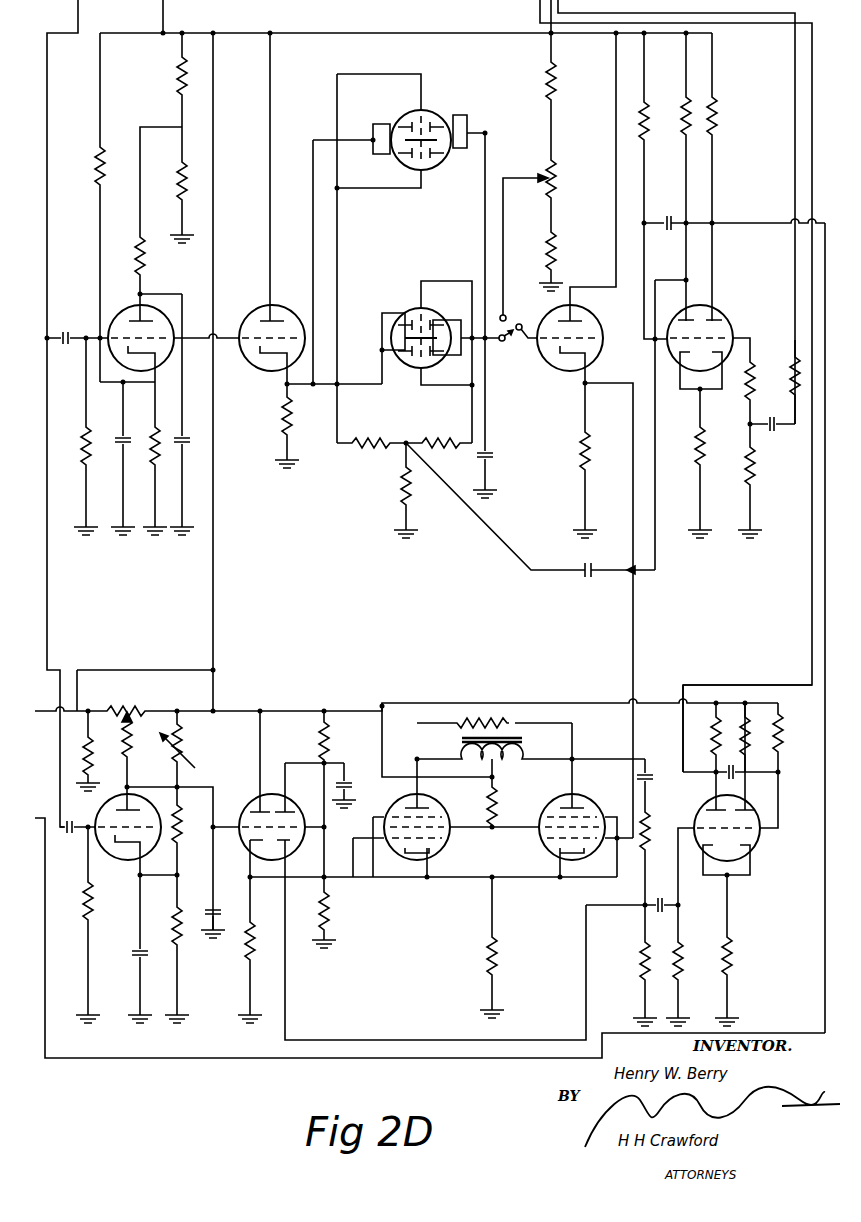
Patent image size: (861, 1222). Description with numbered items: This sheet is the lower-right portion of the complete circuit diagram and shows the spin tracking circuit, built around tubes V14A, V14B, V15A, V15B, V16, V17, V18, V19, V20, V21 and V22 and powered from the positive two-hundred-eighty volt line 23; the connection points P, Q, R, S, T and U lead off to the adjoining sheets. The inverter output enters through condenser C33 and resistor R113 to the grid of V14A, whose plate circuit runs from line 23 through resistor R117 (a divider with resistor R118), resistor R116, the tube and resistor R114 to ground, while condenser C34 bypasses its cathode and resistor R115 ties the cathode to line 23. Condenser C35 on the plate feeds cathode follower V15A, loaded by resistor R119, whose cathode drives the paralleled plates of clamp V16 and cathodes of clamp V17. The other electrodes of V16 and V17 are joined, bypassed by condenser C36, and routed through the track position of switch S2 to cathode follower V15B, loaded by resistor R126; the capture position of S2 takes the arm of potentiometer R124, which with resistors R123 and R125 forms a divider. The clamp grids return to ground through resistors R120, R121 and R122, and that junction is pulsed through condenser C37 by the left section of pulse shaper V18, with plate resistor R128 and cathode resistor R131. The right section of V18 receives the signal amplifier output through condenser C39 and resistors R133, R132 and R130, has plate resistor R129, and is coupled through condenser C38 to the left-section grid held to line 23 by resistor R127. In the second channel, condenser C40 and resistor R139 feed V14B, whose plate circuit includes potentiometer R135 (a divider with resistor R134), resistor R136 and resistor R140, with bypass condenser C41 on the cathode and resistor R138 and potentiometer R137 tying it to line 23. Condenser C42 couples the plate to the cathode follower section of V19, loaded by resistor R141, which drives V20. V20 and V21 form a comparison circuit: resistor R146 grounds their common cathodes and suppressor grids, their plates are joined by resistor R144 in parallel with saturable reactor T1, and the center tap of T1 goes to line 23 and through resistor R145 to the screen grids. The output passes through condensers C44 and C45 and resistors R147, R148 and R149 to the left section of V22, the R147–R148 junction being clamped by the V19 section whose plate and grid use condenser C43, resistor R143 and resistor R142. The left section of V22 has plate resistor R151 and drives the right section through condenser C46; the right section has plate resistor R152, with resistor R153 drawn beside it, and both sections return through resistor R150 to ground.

The terminal P is at (68, 413).
The terminal Q is at (169, 18).
The terminal R is at (676, 386).
The terminal S is at (676, 212).
The terminal T is at (70, 703).
The terminal U is at (430, 929).
The resistor R113 is at (74, 436).
The resistor R114 is at (146, 458).
The resistor R115 is at (81, 207).
The resistor R116 is at (158, 224).
The resistor R117 is at (166, 80).
The resistor R118 is at (170, 185).
The resistor R119 is at (301, 426).
The resistor R120 is at (371, 437).
The resistor R121 is at (439, 437).
The resistor R122 is at (392, 490).
The resistor R123 is at (567, 95).
The potentiometer R124 is at (567, 194).
The resistor R125 is at (564, 260).
The resistor R126 is at (598, 460).
The resistor R127 is at (665, 118).
The resistor R128 is at (684, 137).
The resistor R129 is at (719, 117).
The resistor R130 is at (754, 386).
The resistor R131 is at (713, 463).
The resistor R132 is at (756, 483).
The resistor R133 is at (796, 380).
The resistor R134 is at (88, 770).
The potentiometer R135 is at (441, 702).
The resistor R136 is at (128, 752).
The potentiometer R137 is at (190, 749).
The resistor R138 is at (192, 831).
The resistor R139 is at (100, 925).
The resistor R140 is at (182, 950).
The resistor R141 is at (262, 950).
The resistor R142 is at (340, 794).
The resistor R143 is at (337, 912).
The resistor R144 is at (494, 715).
The resistor R145 is at (509, 802).
The resistor R146 is at (506, 947).
The resistor R147 is at (647, 825).
The resistor R148 is at (630, 965).
The resistor R149 is at (690, 965).
The resistor R150 is at (741, 950).
The resistor R151 is at (704, 737).
The resistor R152 is at (750, 738).
The resistor R153 is at (781, 746).
The condenser C33 is at (77, 329).
The condenser C34 is at (114, 458).
The condenser C35 is at (190, 414).
The condenser C36 is at (497, 315).
The condenser C37 is at (614, 579).
The condenser C38 is at (690, 196).
The condenser C39 is at (772, 430).
The condenser C40 is at (73, 836).
The bypass condenser C41 is at (138, 949).
The condenser C42 is at (222, 922).
The condenser C43 is at (354, 785).
The condenser C44 is at (658, 784).
The condenser C45 is at (632, 899).
The condenser C46 is at (747, 765).
The tube V14A is at (127, 312).
The tube V14B is at (97, 816).
The cathode follower V15A is at (280, 310).
The cathode follower V15B is at (588, 303).
The clamp V16 is at (437, 114).
The clamp V17 is at (432, 320).
The pulse shaper V18 is at (725, 310).
The tube V19 is at (285, 808).
The tube V20 is at (433, 812).
The tube V21 is at (585, 812).
The tube V22 is at (690, 812).
The switch S2 is at (509, 316).
The saturable reactor T1 is at (531, 754).
The positive 280 volt line 23 is at (430, 703).